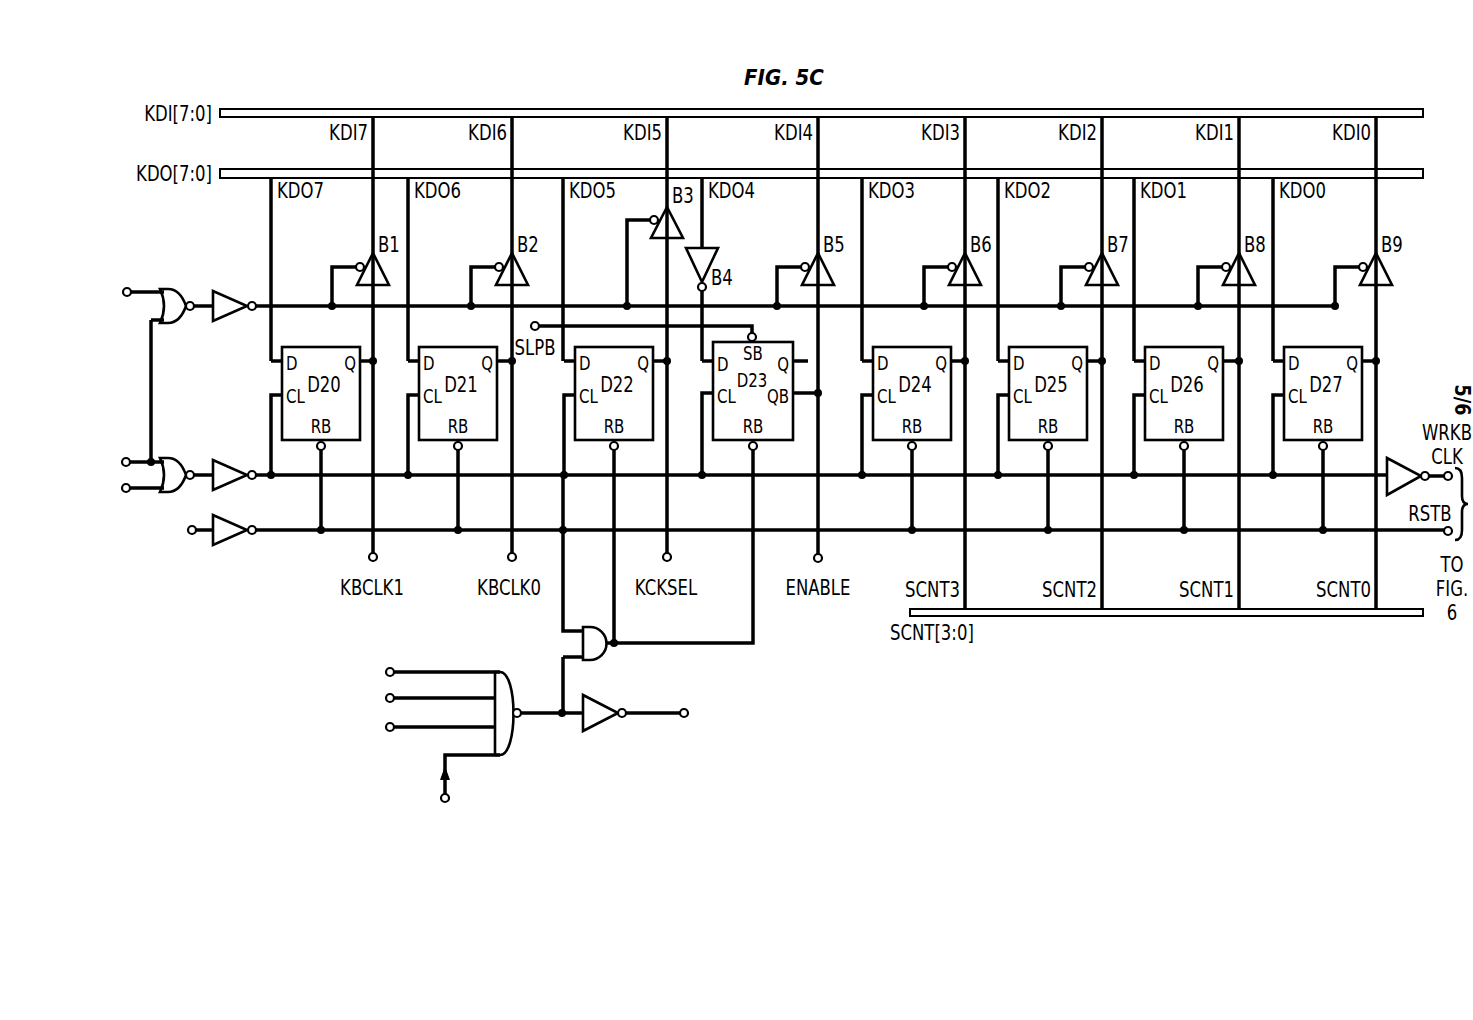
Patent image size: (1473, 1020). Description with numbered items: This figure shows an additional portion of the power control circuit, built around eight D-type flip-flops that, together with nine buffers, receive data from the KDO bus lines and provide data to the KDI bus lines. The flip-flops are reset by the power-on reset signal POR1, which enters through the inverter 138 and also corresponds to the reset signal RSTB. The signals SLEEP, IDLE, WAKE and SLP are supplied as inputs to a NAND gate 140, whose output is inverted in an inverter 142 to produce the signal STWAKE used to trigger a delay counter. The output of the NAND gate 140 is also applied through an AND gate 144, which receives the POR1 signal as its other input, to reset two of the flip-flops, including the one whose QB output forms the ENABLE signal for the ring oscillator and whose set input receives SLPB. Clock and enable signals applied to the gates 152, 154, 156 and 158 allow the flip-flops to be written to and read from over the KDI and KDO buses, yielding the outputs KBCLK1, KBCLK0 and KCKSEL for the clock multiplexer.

The inverter (POR1 buffer) 138 is at (234, 547).
The NAND gate 140 is at (508, 690).
The inverter 142 is at (605, 700).
The AND gate 144 is at (606, 652).
The gate 152 is at (178, 325).
The gate 154 is at (238, 323).
The gate 156 is at (178, 455).
The gate 158 is at (233, 458).